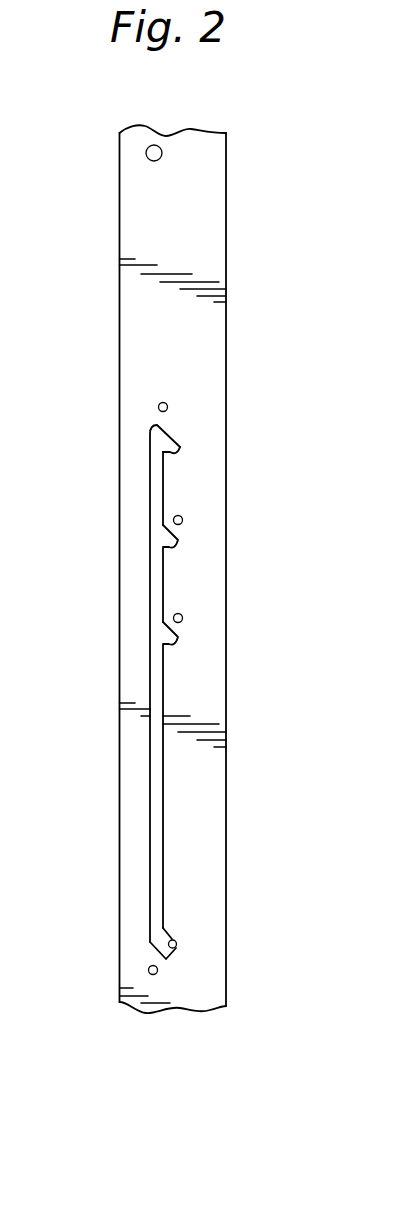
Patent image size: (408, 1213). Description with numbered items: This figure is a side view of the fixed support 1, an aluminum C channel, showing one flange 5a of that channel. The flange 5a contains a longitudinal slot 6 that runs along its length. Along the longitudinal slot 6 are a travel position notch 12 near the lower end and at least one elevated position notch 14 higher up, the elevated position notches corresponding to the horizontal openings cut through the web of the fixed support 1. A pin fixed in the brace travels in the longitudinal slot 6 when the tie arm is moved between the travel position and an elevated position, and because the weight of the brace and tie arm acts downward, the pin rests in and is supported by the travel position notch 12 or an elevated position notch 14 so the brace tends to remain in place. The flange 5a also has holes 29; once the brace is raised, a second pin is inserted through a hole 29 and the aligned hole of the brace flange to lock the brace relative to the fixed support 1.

The fixed support 1 is at (171, 1064).
The flange 5a is at (216, 260).
The longitudinal slot 6 is at (151, 782).
The travel position notch 12 is at (177, 942).
The elevated position notch 14 is at (180, 541).
The hole 29 is at (168, 410).